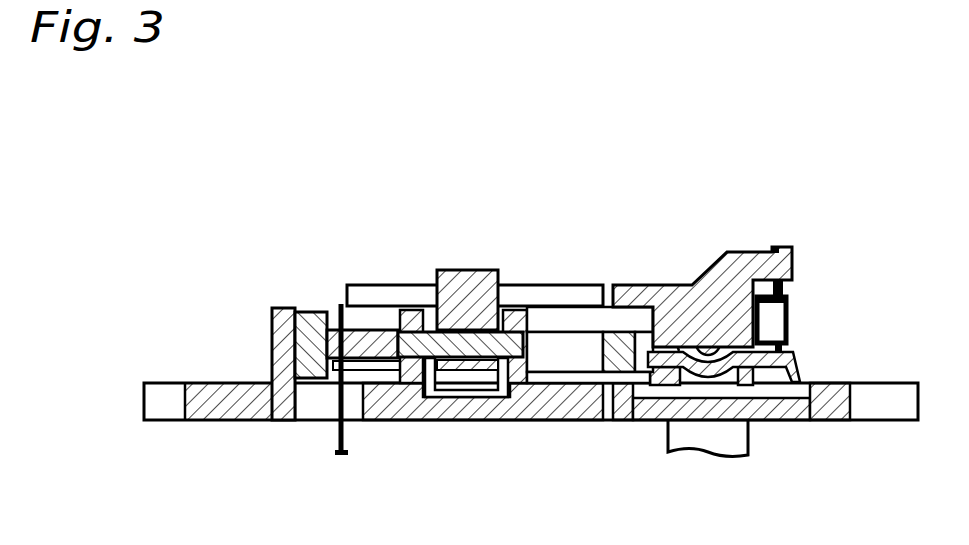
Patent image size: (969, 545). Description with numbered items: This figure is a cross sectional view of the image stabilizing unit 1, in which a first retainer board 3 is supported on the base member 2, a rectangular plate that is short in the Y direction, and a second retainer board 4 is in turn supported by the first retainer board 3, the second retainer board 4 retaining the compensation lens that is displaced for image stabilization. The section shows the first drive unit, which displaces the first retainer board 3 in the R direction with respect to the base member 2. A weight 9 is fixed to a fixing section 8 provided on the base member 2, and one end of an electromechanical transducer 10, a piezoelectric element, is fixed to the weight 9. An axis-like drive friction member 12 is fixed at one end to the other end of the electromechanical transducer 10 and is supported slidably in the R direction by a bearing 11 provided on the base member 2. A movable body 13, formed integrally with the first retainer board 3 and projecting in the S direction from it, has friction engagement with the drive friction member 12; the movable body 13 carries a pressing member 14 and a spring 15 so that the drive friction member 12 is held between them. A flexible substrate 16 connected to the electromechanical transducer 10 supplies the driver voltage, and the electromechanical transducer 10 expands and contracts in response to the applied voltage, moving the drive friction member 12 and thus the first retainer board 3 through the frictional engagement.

The image stabilizing unit 1 is at (194, 214).
The base member 2 is at (244, 426).
The first retainer board 3 is at (622, 281).
The second retainer board 4 is at (583, 330).
The fixing section 8 is at (283, 307).
The weight 9 is at (310, 311).
The electromechanical transducer 10 is at (360, 329).
The bearing 11 is at (411, 284).
The drive friction member 12 is at (416, 309).
The movable body 13 is at (468, 267).
The pressing member 14 is at (466, 374).
The spring 15 is at (789, 298).
The flexible substrate 16 is at (344, 433).